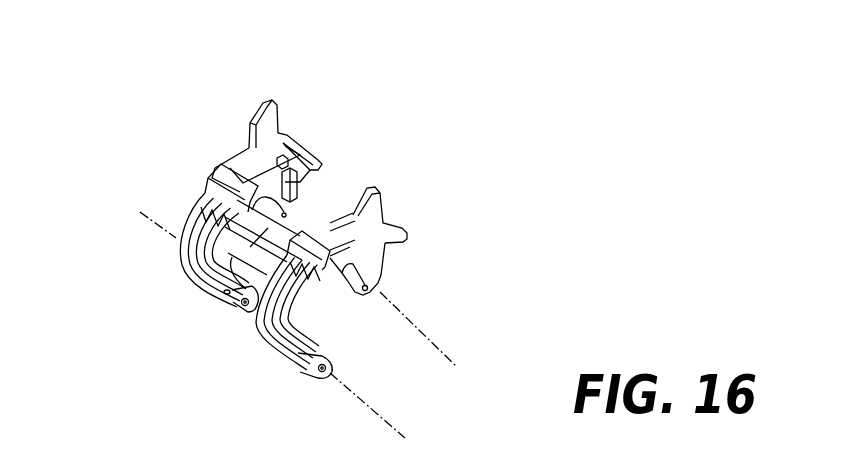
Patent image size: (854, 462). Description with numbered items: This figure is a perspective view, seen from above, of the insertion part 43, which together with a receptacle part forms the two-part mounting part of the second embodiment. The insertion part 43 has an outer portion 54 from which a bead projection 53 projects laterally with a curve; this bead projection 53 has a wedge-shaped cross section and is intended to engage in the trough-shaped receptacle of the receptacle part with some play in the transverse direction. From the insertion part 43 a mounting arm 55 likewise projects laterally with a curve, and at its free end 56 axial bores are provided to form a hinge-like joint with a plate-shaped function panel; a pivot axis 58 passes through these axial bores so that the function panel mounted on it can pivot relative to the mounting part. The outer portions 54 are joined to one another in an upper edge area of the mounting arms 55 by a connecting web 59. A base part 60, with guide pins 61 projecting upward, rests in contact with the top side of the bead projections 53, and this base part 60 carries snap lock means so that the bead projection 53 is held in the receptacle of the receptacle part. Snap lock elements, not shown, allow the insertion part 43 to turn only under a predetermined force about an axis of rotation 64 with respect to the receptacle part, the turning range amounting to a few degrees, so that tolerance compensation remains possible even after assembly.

The insertion part 43 is at (157, 268).
The bead projection 53 is at (378, 282).
The outer portion 54 is at (317, 128).
The mounting arm 55 is at (192, 212).
The free end 56 is at (330, 373).
The pivot axis 58 is at (385, 422).
The connecting web 59 is at (247, 302).
The base part 60 is at (383, 223).
The guide pin 61 is at (258, 113).
The axis of rotation 64 is at (440, 350).